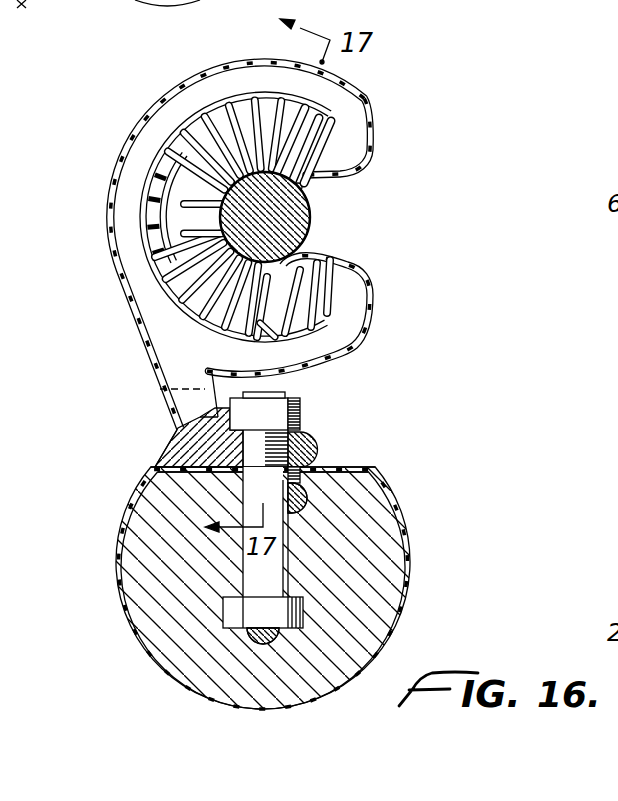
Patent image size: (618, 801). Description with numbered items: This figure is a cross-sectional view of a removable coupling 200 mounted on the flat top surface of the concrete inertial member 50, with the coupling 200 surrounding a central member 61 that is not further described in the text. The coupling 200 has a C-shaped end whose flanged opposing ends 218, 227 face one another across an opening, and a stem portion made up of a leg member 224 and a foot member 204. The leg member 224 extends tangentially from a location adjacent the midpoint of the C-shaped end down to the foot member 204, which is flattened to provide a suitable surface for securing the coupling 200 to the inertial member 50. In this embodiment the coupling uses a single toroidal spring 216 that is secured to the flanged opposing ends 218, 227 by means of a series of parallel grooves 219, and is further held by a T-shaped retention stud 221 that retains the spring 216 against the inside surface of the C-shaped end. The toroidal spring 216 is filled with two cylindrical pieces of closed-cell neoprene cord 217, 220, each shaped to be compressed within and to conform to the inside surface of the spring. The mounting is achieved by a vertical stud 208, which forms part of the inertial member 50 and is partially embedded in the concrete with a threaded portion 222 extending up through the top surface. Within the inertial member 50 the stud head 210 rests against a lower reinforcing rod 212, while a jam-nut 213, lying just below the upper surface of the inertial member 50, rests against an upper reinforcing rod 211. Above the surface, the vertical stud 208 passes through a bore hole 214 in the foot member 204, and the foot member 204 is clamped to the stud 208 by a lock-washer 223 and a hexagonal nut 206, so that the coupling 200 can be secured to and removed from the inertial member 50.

The coupling 200 is at (197, 95).
The toroidal spring 216 is at (183, 142).
The closed-cell neoprene cord 217 is at (182, 158).
The T-shaped retention stud 221 is at (167, 218).
The hub 61 is at (312, 212).
The flanged opposing end 218 is at (283, 123).
The parallel grooves 219 is at (320, 143).
The flanged opposing end 227 is at (283, 297).
The closed-cell neoprene cord 220 is at (188, 322).
The leg member 224 is at (172, 397).
The hexagonal nut 206 is at (233, 407).
The bore hole 214 is at (247, 447).
The jam-nut 213 is at (210, 480).
The vertical mounting stud 208 is at (250, 578).
The lock-washer 223 is at (270, 428).
The threaded portion 222 is at (292, 452).
The foot member 204 is at (312, 450).
The upper reinforcing rod 211 is at (310, 503).
The stud head 210 is at (225, 620).
The lower reinforcing rod 212 is at (252, 655).
The inertial member 50 is at (387, 621).